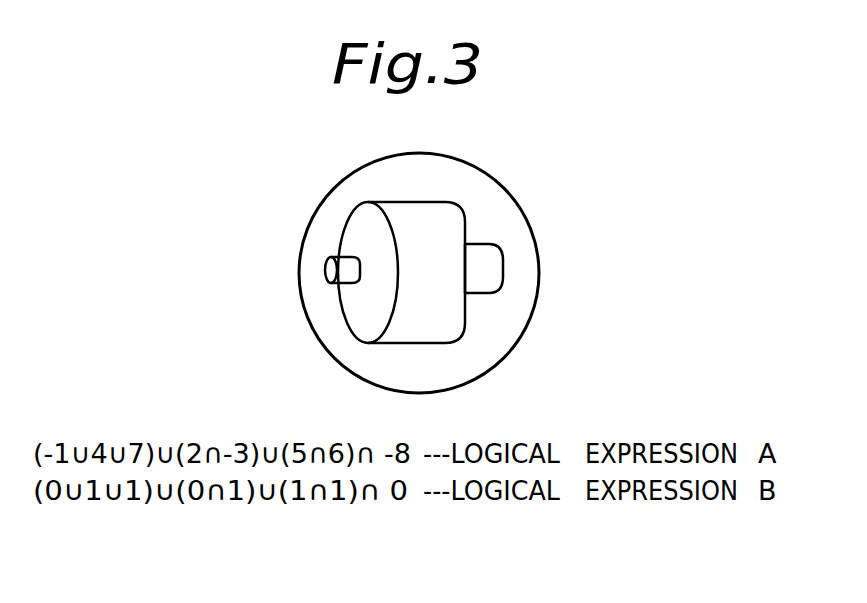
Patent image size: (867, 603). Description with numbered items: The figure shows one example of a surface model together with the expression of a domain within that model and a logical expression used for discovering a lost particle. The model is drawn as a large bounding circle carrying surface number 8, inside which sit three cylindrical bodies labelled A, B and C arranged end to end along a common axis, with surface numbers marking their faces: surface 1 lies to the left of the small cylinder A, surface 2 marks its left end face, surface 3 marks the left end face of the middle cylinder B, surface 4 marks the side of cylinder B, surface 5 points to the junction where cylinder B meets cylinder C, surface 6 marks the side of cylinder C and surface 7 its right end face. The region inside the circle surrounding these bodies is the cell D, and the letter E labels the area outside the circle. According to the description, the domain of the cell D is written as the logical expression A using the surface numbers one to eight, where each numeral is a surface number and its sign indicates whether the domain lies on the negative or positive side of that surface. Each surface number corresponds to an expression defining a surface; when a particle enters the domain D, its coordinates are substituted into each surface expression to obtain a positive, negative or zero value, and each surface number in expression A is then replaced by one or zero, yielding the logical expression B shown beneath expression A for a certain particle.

The surface number 1 is at (319, 270).
The surface number 2 is at (336, 257).
The surface number 3 is at (368, 272).
The surface number 4 is at (416, 273).
The surface number 5 is at (465, 238).
The surface number 6 is at (477, 270).
The surface number 7 is at (506, 268).
The surface number 8 is at (419, 257).
The logical expression A is at (330, 252).
The logical expression B is at (401, 273).
The cylinder C is at (494, 270).
The cell D is at (431, 272).
The exterior region E is at (424, 257).